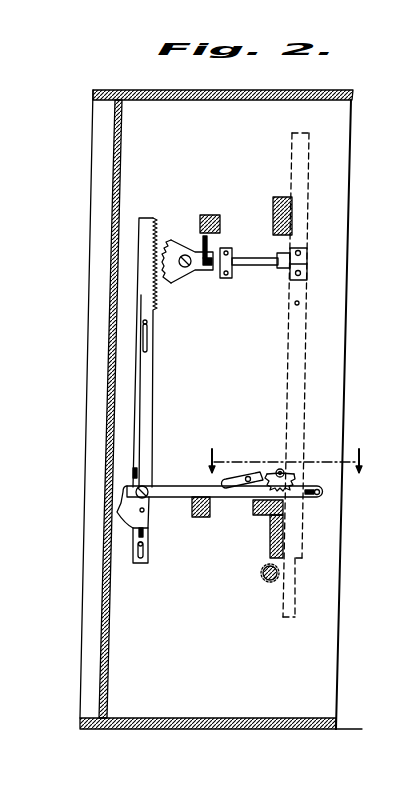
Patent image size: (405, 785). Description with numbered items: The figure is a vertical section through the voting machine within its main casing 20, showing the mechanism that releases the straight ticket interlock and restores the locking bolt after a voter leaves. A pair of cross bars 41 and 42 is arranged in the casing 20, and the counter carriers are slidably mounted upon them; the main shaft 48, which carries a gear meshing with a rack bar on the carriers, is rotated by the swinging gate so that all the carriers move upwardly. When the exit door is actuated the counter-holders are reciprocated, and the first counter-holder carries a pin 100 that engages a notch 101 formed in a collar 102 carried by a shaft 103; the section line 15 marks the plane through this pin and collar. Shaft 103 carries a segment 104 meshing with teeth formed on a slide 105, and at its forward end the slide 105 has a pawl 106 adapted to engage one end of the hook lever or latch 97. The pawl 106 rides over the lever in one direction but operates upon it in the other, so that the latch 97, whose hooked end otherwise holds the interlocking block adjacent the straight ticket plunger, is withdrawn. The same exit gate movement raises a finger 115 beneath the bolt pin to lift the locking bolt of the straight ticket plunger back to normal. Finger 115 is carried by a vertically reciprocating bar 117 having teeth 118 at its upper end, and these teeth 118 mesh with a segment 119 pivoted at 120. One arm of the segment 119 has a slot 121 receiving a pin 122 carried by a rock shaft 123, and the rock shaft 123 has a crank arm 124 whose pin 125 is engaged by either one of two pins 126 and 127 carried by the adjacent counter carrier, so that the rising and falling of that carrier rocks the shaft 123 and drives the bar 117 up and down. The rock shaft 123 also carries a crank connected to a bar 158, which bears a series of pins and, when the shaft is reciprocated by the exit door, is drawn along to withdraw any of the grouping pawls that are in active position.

The main casing 20 is at (80, 643).
The cross bar 41 is at (293, 215).
The cross bar 42 is at (284, 536).
The main shaft 48 is at (267, 584).
The latch 97 is at (149, 534).
The pin 100 is at (290, 481).
The notch 101 is at (285, 469).
The collar 102 is at (279, 467).
The shaft 103 is at (266, 512).
The segment 104 is at (259, 498).
The slide 105 is at (201, 518).
The pawl 106 is at (118, 512).
The finger 115 is at (137, 472).
The vertically reciprocating bar 117 is at (152, 386).
The teeth 118 is at (158, 299).
The segment 119 is at (168, 233).
The pivot 120 is at (187, 272).
The slot 121 is at (210, 268).
The pin 122 is at (212, 256).
The rock shaft 123 is at (254, 250).
The crank arm 124 is at (288, 273).
The pin 125 is at (303, 283).
The pin 126 is at (303, 276).
The pin 127 is at (299, 303).
The bar 158 is at (200, 243).
The section line 15- 15 is at (286, 461).